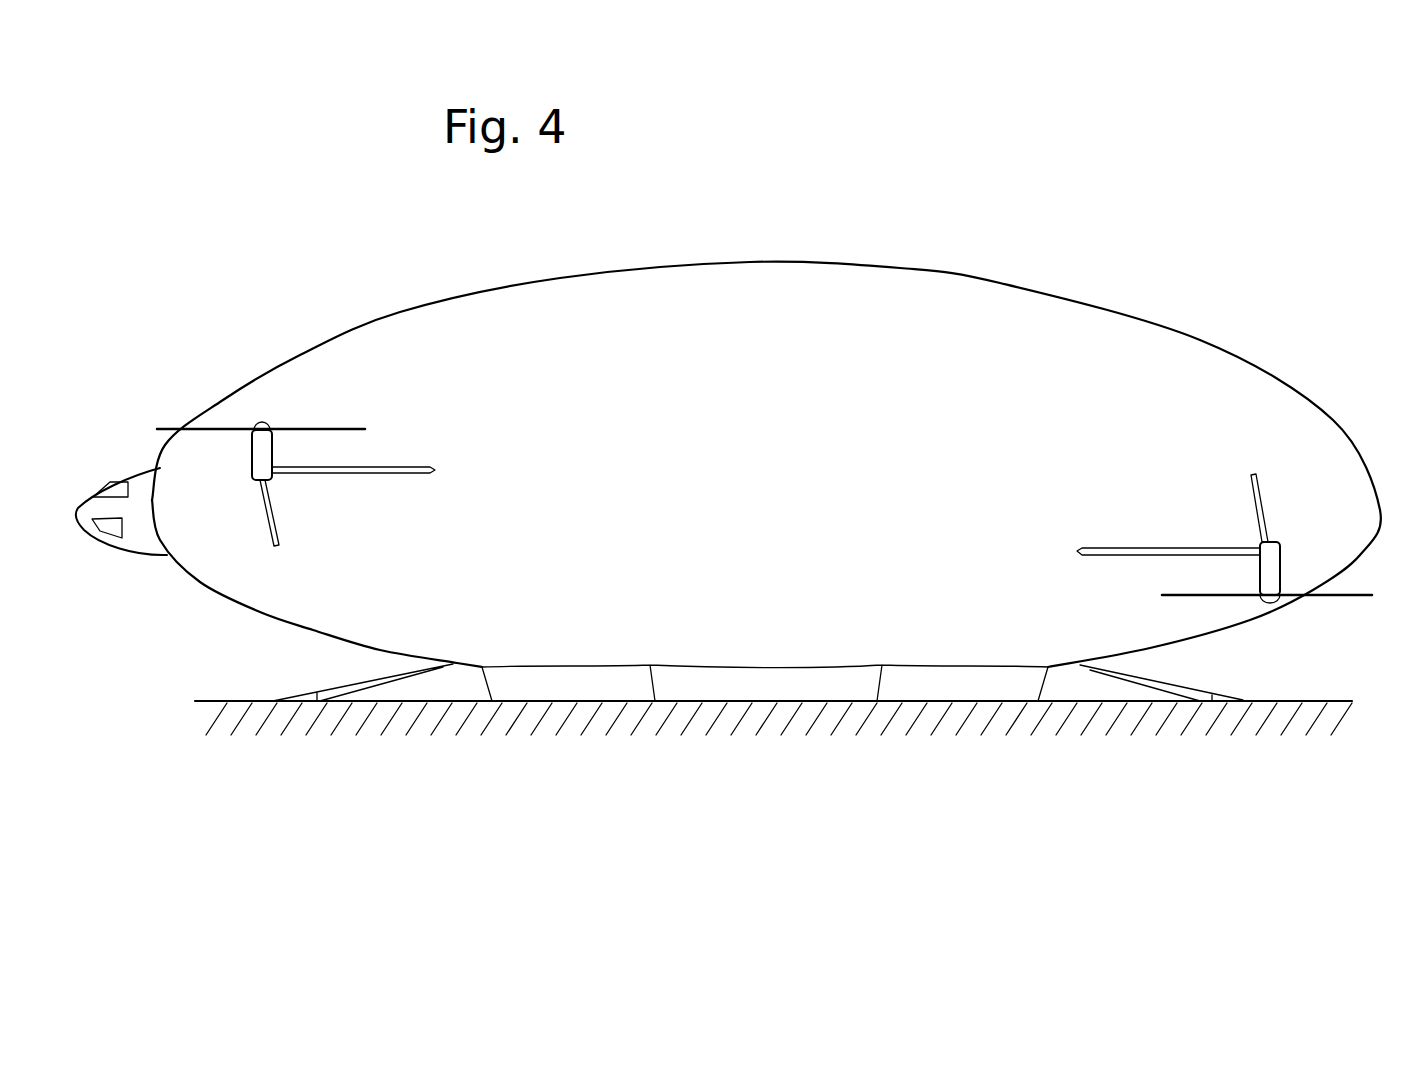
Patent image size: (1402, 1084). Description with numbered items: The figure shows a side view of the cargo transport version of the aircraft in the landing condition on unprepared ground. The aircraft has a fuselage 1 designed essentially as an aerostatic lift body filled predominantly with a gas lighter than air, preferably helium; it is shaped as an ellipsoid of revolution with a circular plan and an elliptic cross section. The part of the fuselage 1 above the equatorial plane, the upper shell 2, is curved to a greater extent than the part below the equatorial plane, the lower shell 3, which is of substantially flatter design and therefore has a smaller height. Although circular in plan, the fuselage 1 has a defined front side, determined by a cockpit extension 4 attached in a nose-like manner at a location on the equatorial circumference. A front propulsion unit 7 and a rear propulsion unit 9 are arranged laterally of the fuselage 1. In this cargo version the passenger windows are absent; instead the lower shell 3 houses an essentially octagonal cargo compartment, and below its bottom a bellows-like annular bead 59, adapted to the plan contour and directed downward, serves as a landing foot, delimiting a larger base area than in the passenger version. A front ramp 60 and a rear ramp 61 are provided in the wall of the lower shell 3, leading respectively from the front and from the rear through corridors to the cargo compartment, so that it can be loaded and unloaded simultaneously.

The fuselage 1 is at (898, 259).
The upper shell 2 is at (770, 337).
The lower shell 3 is at (760, 623).
The cockpit extension 4 is at (132, 533).
The front propulsion unit 7 is at (243, 450).
The rear propulsion unit 9 is at (1290, 558).
The bellows-like annular bead 59 is at (573, 683).
The front ramp 60 is at (352, 687).
The rear ramp 61 is at (1183, 690).